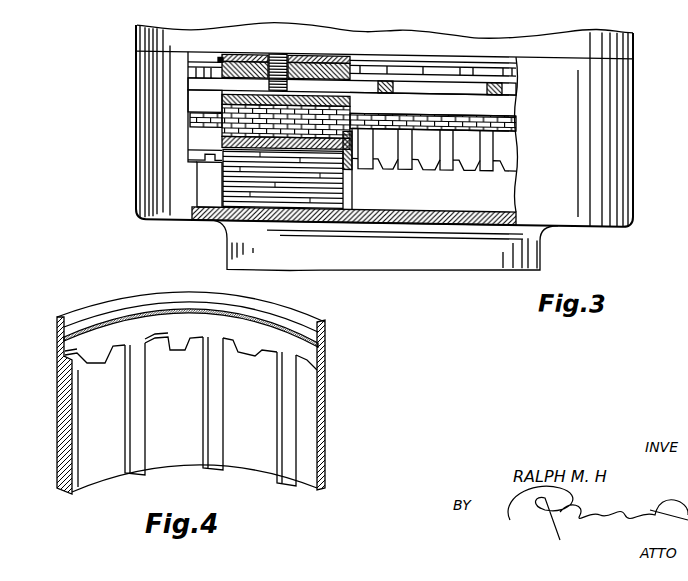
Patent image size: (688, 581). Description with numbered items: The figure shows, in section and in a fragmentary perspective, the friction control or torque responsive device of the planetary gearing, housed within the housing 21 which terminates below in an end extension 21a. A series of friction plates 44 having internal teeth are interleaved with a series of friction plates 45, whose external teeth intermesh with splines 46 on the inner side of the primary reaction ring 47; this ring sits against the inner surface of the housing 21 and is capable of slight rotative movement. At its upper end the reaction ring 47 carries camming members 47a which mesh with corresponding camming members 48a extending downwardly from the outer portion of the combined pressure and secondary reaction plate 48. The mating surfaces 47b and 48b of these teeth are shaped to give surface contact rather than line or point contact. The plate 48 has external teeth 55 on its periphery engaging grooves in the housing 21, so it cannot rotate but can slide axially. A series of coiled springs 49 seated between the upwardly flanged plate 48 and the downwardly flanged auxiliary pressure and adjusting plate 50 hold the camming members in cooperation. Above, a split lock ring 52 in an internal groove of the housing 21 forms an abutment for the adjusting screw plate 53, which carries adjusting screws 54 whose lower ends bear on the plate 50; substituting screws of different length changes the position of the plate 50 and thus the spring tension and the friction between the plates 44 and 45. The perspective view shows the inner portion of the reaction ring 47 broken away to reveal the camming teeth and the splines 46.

In FIG. 3, the housing 21 is at (635, 109).
In FIG. 3, the end extension 21a is at (540, 253).
In FIG. 3, the friction plates 44 is at (224, 177).
In FIG. 3, the friction plates 45 is at (343, 201).
In FIG. 4, the splines 46 is at (280, 462).
In FIG. 3, the primary reaction ring 47 is at (498, 193).
In FIG. 4, the primary reaction ring 47 is at (183, 448).
In FIG. 3, the camming members 47a is at (503, 165).
In FIG. 4, the camming members 47a is at (305, 368).
In FIG. 4, the tooth surface 47b is at (157, 343).
In FIG. 3, the combined pressure and secondary reaction plate 48 is at (344, 169).
In FIG. 4, the combined pressure and secondary reaction plate 48 is at (58, 351).
In FIG. 3, the camming members 48a is at (450, 157).
In FIG. 4, the camming members 48a is at (175, 350).
In FIG. 4, the tooth surface 48b is at (240, 350).
In FIG. 3, the coiled springs 49 is at (440, 116).
In FIG. 3, the auxiliary pressure and adjusting plate 50 is at (505, 105).
In FIG. 3, the split lock ring 52 is at (379, 71).
In FIG. 3, the adjusting screw plate 53 is at (415, 76).
In FIG. 3, the adjusting screws 54 is at (278, 57).
In FIG. 3, the external teeth 55 is at (407, 161).